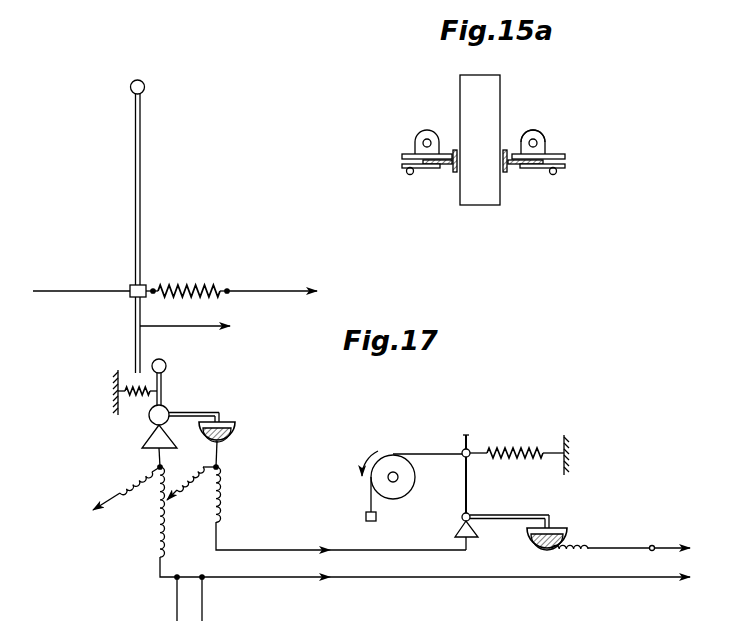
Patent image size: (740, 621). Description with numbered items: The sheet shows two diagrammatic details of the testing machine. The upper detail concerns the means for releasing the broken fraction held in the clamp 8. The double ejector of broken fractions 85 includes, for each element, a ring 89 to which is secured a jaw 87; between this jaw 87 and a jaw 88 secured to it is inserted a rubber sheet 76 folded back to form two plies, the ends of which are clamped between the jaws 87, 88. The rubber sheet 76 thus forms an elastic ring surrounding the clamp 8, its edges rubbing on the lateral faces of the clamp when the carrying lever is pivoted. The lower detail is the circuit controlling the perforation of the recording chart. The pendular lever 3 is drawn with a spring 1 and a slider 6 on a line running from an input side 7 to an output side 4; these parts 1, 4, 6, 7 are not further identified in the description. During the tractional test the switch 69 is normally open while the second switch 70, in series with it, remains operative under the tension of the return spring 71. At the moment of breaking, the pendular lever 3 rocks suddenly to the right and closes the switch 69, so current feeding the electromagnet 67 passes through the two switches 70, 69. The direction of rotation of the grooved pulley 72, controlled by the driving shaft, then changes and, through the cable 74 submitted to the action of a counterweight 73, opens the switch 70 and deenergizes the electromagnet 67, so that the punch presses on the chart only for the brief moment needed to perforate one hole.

In FIG. 17, the spring 1 is at (188, 285).
In FIG. 17, the pendular lever 3 is at (137, 185).
In FIG. 17, the output line 4 is at (257, 292).
In FIG. 17, the slider block 6 is at (132, 283).
In FIG. 17, the input line 7 is at (58, 292).
In FIG. 15A, the clamp 8 is at (485, 197).
In FIG. 17, the electromagnet 67 is at (640, 578).
In FIG. 17, the switch 69 is at (227, 422).
In FIG. 17, the second switch 70 is at (513, 518).
In FIG. 17, the return spring 71 is at (503, 452).
In FIG. 17, the grooved pulley 72 is at (384, 460).
In FIG. 17, the counterweight 73 is at (368, 520).
In FIG. 17, the cable 74 is at (429, 453).
In FIG. 15A, the rubber sheet 76 is at (453, 150).
In FIG. 15A, the ejector of broken fractions 85 is at (418, 134).
In FIG. 15A, the jaw 87 is at (402, 154).
In FIG. 15A, the jaw 88 is at (403, 166).
In FIG. 15A, the ring 89 is at (539, 132).